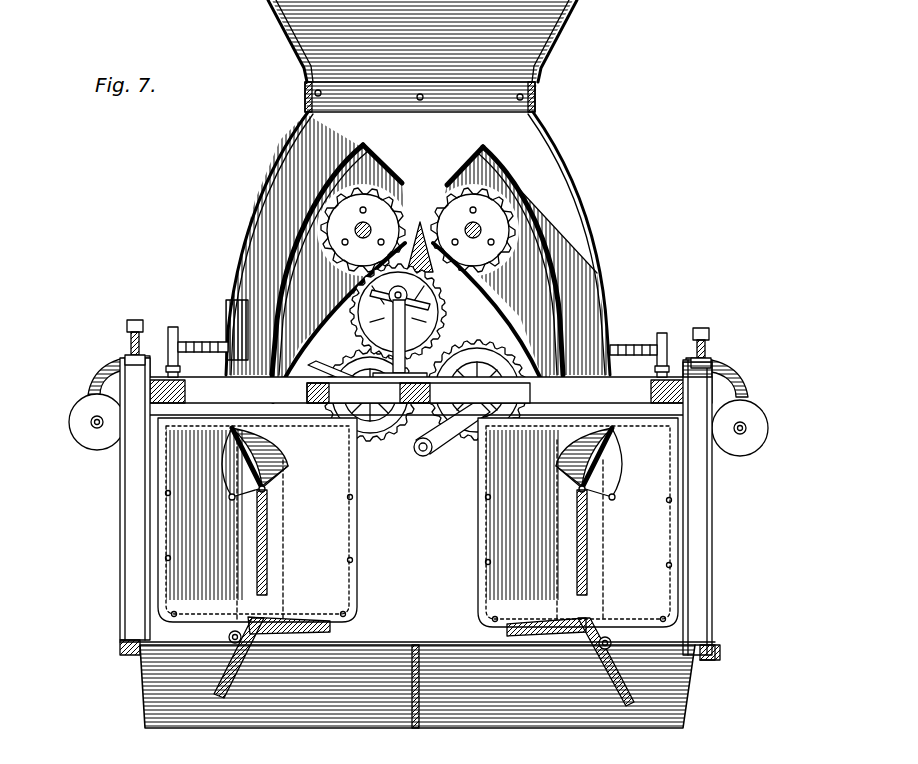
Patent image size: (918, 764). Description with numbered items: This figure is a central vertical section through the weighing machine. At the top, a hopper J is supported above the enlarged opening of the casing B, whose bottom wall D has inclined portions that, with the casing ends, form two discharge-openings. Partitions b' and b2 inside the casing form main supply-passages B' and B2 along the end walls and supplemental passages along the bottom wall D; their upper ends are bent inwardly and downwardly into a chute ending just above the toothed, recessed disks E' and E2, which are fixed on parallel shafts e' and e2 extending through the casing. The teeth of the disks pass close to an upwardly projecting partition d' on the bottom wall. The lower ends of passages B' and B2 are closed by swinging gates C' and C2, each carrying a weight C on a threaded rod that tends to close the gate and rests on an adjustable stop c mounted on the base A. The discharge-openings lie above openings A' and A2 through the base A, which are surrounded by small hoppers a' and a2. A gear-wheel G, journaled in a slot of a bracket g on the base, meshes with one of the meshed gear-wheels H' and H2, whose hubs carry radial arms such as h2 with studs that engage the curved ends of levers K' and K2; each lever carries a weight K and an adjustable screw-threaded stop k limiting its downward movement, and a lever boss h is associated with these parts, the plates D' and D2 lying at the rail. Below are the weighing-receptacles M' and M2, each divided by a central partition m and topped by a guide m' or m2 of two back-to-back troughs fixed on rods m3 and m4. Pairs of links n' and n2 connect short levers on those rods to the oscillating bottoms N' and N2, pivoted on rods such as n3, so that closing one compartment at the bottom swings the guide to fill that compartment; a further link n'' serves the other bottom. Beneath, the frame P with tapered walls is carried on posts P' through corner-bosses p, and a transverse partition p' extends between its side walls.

The hopper J is at (556, 43).
The casing B is at (436, 256).
The main supply-passage B' is at (254, 243).
The main supply-passage B2 is at (520, 187).
The disk E' is at (343, 260).
The disk E2 is at (447, 175).
The partition b' is at (376, 130).
The partition b2 is at (487, 150).
The shaft e' is at (363, 230).
The shaft e2 is at (473, 230).
The divider post d' is at (411, 284).
The gear-wheel G is at (370, 379).
The bracket g is at (477, 381).
The bottom wall D is at (413, 323).
The left rail plate D' is at (418, 395).
The right rail plate D2 is at (583, 391).
The cross bar h is at (418, 393).
The gear-wheel H' is at (350, 424).
The gear-wheel H2 is at (467, 450).
The radial arm h2 is at (428, 462).
The lever K' is at (99, 369).
The lever K2 is at (750, 382).
The weight K is at (417, 439).
The post P' is at (407, 509).
The screw-threaded stop k is at (128, 325).
The weight C is at (437, 328).
The swinging gate C' is at (221, 309).
The adjustable stop c is at (168, 362).
The small hopper or funnel a' is at (203, 327).
The small hopper or funnel a2 is at (653, 345).
The swinging gate C2 is at (608, 330).
The base A is at (719, 363).
The opening A' is at (209, 423).
The opening A2 is at (585, 408).
The weighing-receptacle M' is at (281, 520).
The weighing-receptacle M2 is at (482, 588).
The guide m' is at (263, 460).
The guide m2 is at (620, 452).
The rod m3 is at (272, 492).
The rod m4 is at (565, 490).
The central partition m is at (439, 542).
The links n' is at (264, 635).
The links n2 is at (560, 580).
The right leg n'' is at (610, 647).
The oscillating bottom N' is at (315, 623).
The oscillating bottom N2 is at (507, 632).
The rod n3 is at (230, 636).
The frame P is at (427, 685).
The corner-boss p is at (731, 655).
The transverse partition p' is at (410, 704).